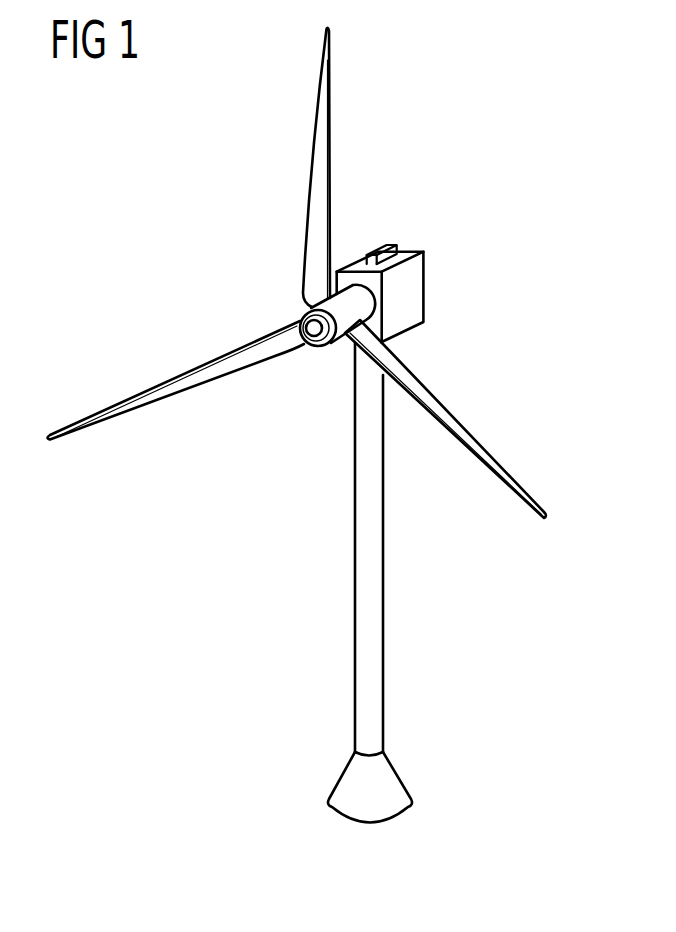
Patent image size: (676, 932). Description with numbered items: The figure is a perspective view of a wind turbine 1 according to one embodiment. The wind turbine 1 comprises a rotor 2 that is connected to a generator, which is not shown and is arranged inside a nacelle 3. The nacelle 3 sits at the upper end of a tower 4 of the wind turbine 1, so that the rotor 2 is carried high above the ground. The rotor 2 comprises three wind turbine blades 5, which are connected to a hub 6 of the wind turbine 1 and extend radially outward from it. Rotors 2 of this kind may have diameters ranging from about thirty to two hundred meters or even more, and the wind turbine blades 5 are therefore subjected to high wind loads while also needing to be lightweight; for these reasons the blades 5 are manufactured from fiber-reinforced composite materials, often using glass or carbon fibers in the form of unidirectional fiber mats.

The wind turbine 1 is at (166, 193).
The rotor 2 is at (157, 367).
The nacelle 3 is at (412, 284).
The tower 4 is at (372, 657).
The wind turbine blade 5 is at (321, 163).
The hub 6 is at (357, 307).